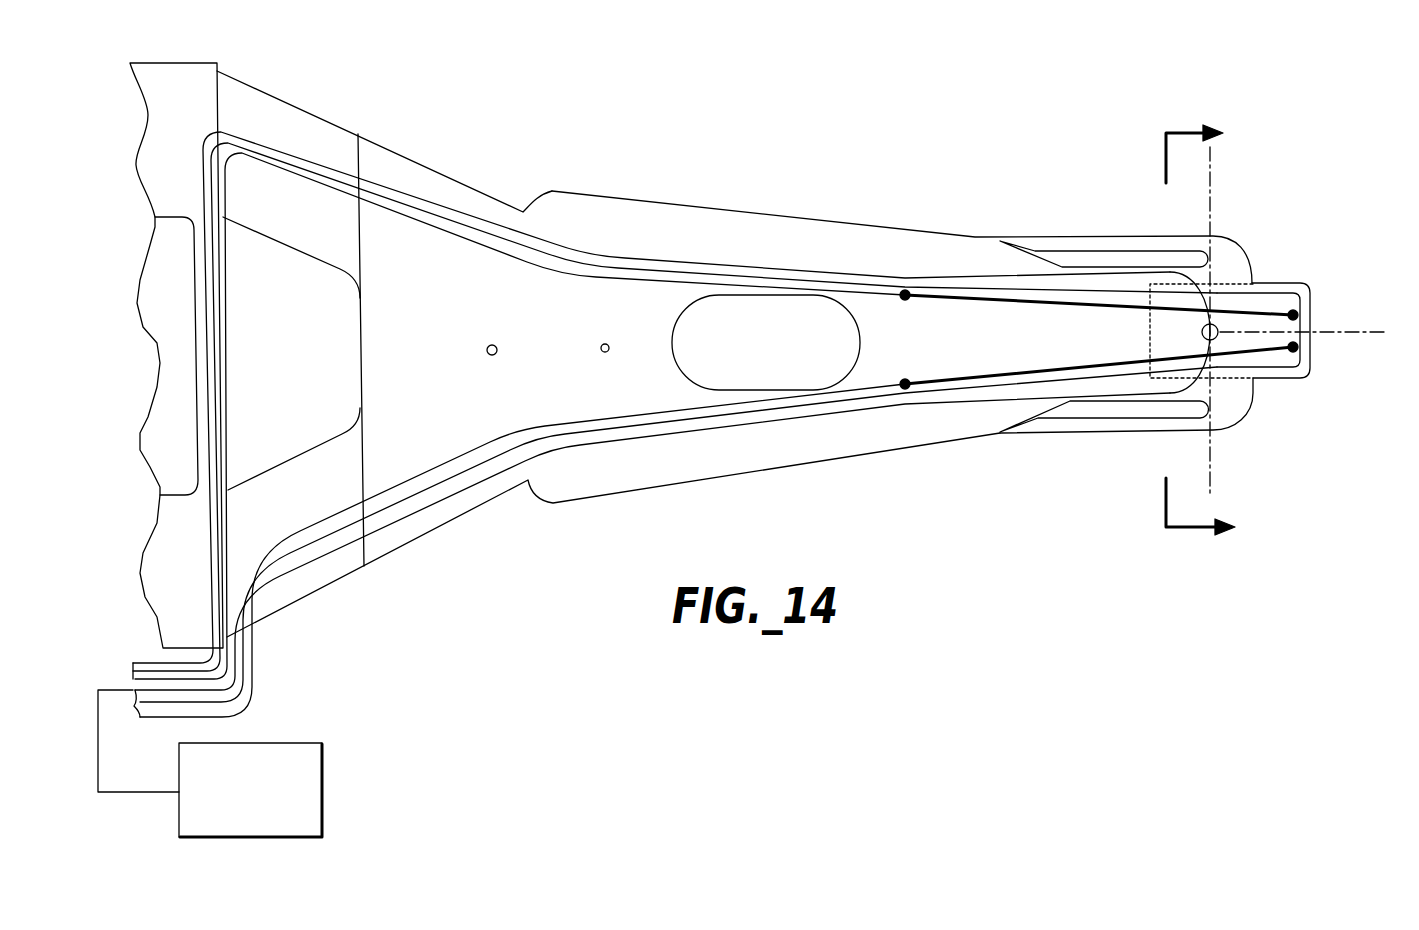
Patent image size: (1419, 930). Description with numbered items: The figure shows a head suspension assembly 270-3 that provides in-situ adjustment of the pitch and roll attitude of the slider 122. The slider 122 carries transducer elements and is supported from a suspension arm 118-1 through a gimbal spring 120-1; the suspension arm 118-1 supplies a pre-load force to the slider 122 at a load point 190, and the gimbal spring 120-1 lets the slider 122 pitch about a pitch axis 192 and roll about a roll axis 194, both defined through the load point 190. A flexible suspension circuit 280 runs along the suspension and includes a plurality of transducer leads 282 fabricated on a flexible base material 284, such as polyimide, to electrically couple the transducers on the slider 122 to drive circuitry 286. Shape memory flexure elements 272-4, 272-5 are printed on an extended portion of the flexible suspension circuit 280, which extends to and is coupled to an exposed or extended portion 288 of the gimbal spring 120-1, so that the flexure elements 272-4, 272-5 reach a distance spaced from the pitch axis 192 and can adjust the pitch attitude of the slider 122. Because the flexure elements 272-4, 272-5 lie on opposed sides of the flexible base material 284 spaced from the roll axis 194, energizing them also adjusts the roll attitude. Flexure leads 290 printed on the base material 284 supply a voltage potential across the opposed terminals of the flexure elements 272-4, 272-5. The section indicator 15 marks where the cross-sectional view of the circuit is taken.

The suspension arm 118-1 is at (1101, 339).
The gimbal spring 120-1 is at (1143, 237).
The slider 122 is at (1146, 333).
The load point 190 is at (1214, 323).
The pitch axis 192 is at (1215, 452).
The roll axis 194 is at (1340, 328).
The head suspension assembly 270-3 is at (893, 197).
The shape memory flexure element 272-4 is at (907, 292).
The shape memory flexure element 272-5 is at (908, 387).
The flexible suspension circuit 280 is at (718, 263).
The transducer leads 282 is at (768, 280).
The flexible base material 284 is at (541, 353).
The drive circuitry 286 is at (277, 743).
The extended portion of the gimbal spring 288 is at (1272, 283).
The flexure leads 290 is at (545, 275).
The section view indicator 15 is at (1218, 329).